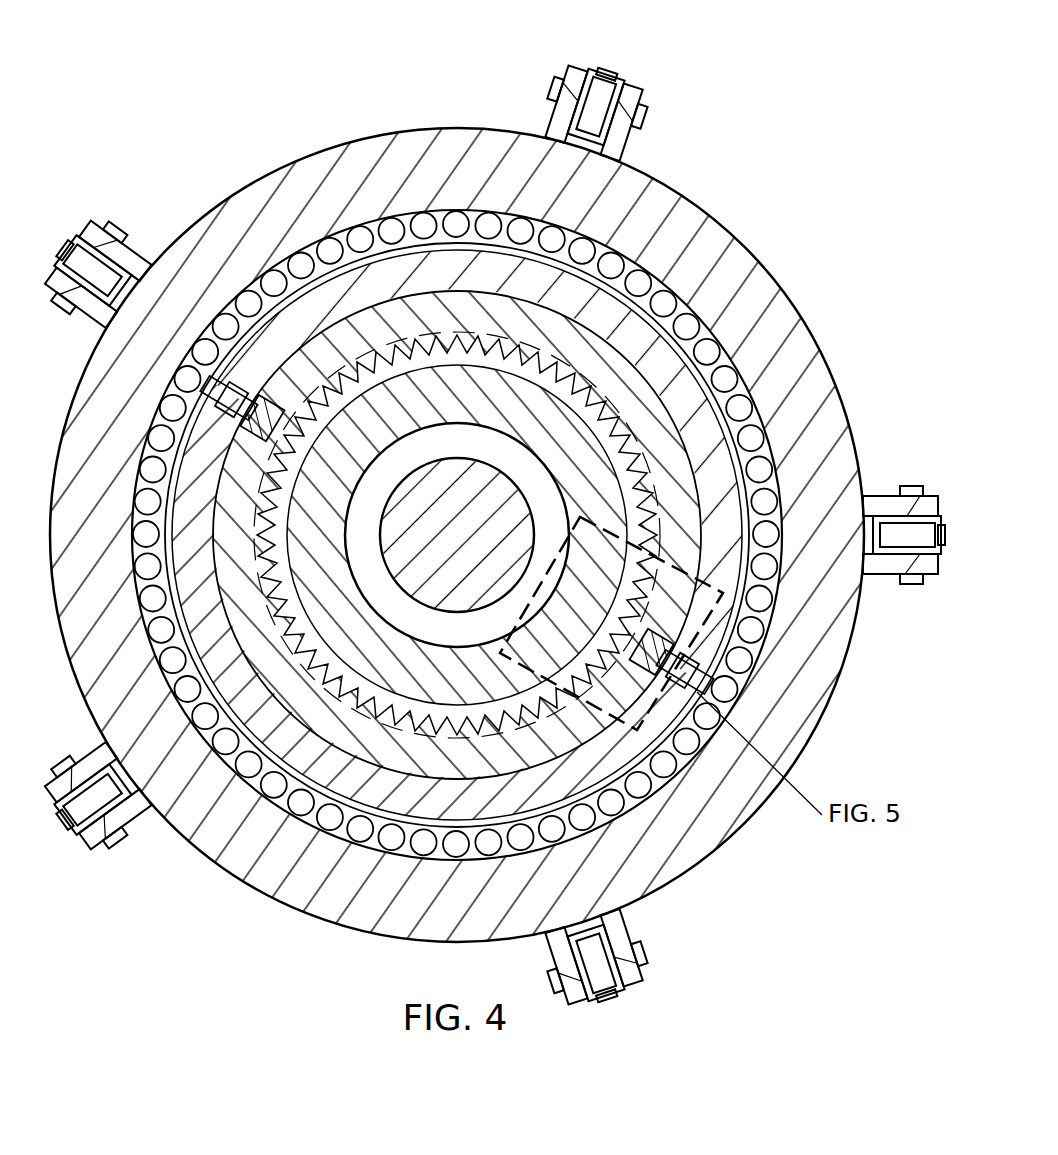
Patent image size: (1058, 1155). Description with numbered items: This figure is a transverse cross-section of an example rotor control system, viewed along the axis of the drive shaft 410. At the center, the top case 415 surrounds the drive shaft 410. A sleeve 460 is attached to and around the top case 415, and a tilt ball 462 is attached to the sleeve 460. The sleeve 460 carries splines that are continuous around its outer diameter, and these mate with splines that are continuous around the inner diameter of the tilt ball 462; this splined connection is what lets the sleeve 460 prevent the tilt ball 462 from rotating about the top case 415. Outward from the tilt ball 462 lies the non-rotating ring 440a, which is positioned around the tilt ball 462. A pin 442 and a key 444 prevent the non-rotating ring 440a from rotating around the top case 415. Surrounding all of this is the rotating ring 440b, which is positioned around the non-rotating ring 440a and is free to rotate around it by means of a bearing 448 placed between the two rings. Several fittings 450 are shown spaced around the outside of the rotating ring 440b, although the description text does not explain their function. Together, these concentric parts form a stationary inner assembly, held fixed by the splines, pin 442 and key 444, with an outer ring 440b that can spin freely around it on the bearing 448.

The drive shaft 410 is at (485, 566).
The top case 415 is at (473, 413).
The non-rotating ring 440a is at (257, 336).
The rotating ring 440b is at (297, 173).
The pin 442 is at (200, 397).
The key 444 is at (320, 425).
The bearing 448 is at (448, 853).
The clamp assembly 450 is at (608, 72).
The sleeve 460 is at (428, 360).
The tilt ball 462 is at (603, 400).